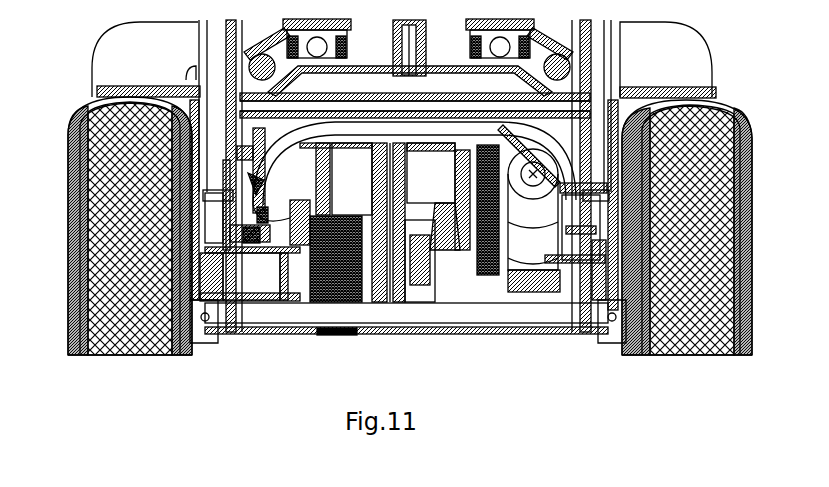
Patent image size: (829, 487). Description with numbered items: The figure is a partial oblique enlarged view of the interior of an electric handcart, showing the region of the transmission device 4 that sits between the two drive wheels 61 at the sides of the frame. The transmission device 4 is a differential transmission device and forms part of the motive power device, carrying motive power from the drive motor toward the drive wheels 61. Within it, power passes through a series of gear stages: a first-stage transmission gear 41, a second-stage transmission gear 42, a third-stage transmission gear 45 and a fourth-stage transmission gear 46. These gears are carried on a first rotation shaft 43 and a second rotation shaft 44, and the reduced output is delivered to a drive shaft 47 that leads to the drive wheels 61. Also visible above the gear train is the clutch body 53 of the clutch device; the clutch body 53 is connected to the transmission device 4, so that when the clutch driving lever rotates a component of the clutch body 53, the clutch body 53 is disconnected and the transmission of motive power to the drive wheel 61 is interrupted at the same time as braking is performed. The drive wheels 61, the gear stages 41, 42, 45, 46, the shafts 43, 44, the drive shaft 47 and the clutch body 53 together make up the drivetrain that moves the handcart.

The transmission device 4 is at (567, 352).
The first-stage transmission gear 41 is at (528, 276).
The second-stage transmission gear 42 is at (487, 276).
The first rotation shaft 43 is at (471, 270).
The second rotation shaft 44 is at (396, 272).
The third-stage transmission gear 45 is at (368, 272).
The fourth-stage transmission gear 46 is at (313, 262).
The drive shaft 47 is at (262, 278).
The clutch body 53 is at (437, 203).
The drive wheel 61 is at (92, 172).